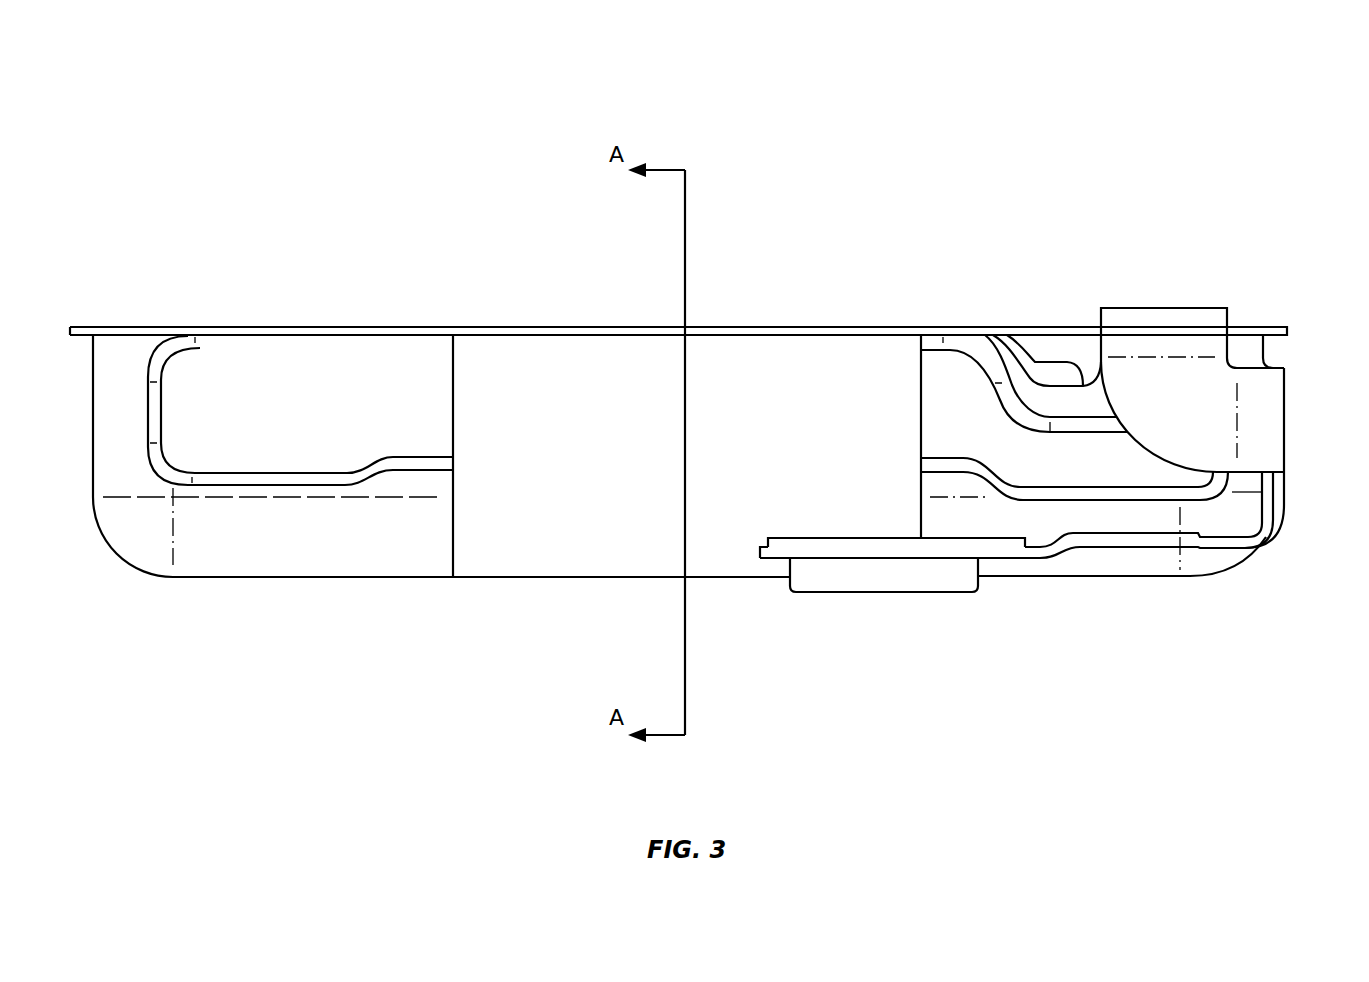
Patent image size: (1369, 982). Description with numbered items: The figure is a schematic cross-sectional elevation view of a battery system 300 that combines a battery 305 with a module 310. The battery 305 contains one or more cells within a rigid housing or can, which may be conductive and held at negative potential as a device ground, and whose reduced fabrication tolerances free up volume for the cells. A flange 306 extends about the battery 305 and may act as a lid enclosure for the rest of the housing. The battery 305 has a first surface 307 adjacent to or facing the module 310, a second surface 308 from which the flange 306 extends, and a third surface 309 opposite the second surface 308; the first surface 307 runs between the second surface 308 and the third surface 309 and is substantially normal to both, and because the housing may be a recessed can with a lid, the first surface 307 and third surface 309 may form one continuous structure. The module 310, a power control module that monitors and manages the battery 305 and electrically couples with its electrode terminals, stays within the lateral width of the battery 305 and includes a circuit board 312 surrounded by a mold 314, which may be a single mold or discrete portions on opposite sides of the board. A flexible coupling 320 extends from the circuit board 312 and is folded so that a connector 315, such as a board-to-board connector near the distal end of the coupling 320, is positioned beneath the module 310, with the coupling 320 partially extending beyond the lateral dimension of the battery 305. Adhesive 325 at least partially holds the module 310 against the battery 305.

The battery system 300 is at (178, 126).
The battery 305 is at (310, 327).
The flange 306 is at (1285, 327).
The first surface 307 is at (127, 427).
The second surface 308 is at (442, 328).
The third surface 309 is at (337, 577).
The module 310 is at (158, 463).
The circuit board 312 is at (1018, 357).
The mold 314 is at (972, 340).
The connector 315 is at (980, 582).
The coupling 320 is at (1262, 537).
The adhesive 325 is at (573, 332).